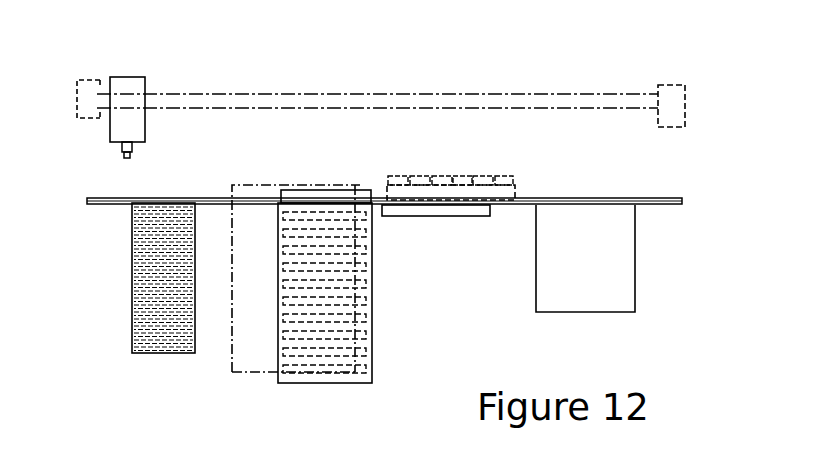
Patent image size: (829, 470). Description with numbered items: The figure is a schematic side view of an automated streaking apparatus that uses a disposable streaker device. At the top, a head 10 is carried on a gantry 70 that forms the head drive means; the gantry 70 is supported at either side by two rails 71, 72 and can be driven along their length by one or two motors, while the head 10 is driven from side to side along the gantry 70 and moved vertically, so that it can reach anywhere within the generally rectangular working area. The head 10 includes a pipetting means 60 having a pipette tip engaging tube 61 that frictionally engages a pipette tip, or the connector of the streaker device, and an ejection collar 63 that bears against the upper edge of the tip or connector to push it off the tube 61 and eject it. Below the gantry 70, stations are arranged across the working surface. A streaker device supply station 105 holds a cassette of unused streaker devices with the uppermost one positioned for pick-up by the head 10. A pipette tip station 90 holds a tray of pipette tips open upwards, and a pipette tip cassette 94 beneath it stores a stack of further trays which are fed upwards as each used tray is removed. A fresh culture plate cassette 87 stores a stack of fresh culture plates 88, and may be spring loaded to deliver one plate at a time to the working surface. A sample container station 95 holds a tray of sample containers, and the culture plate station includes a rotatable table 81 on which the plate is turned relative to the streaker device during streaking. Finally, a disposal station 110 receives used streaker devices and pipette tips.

The head 10 is at (118, 87).
The pipetting means 60 is at (131, 160).
The pipette tip engaging tube 61 is at (130, 158).
The ejection collar 63 is at (132, 143).
The gantry 70 is at (470, 103).
The rail 71 is at (92, 108).
The rail 72 is at (668, 102).
The rotatable table 81 is at (457, 207).
The fresh culture plate cassette 87 is at (375, 365).
The fresh culture plates 88 is at (335, 192).
The pipette tip station 90 is at (272, 281).
The pipette tip cassette 94 is at (253, 355).
The sample container station 95 is at (522, 182).
The streaker device supply station 105 is at (128, 272).
The disposal station 110 is at (596, 279).